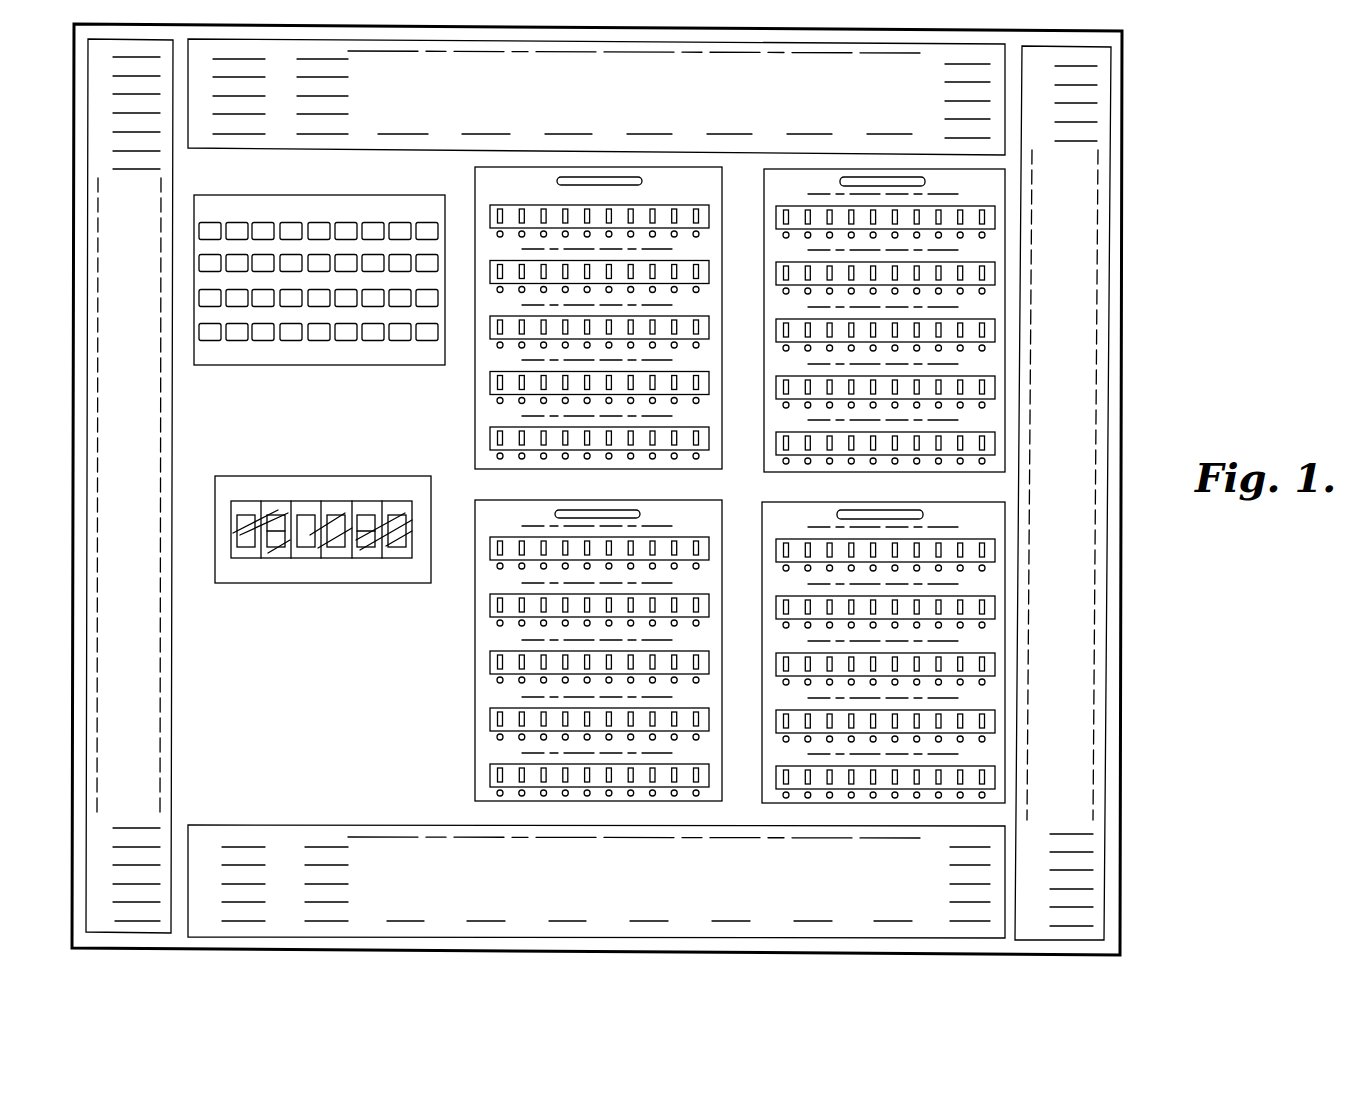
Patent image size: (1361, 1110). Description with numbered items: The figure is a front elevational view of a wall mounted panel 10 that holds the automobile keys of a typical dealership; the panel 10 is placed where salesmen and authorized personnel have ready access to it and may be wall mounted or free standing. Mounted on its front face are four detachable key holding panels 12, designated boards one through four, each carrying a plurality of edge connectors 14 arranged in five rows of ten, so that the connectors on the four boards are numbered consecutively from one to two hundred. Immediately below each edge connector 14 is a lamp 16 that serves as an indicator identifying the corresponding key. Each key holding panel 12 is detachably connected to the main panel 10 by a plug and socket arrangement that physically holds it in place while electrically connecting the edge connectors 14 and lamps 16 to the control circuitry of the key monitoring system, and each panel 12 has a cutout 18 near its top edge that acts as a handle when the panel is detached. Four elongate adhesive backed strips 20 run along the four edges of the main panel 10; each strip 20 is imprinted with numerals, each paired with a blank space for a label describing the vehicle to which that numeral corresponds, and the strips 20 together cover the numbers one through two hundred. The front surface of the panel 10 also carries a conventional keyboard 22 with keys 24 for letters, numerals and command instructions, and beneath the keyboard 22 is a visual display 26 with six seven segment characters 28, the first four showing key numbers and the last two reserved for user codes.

The panel 10 is at (1125, 312).
The key holding panel 12 is at (743, 497).
The edge connector 14 is at (653, 212).
The lamp 16 is at (783, 291).
The cutout 18 is at (565, 181).
The adhesive backed strip 20 is at (585, 72).
The keyboard 22 is at (319, 282).
The key 24 is at (277, 222).
The visual display 26 is at (323, 530).
The character 28 is at (277, 503).